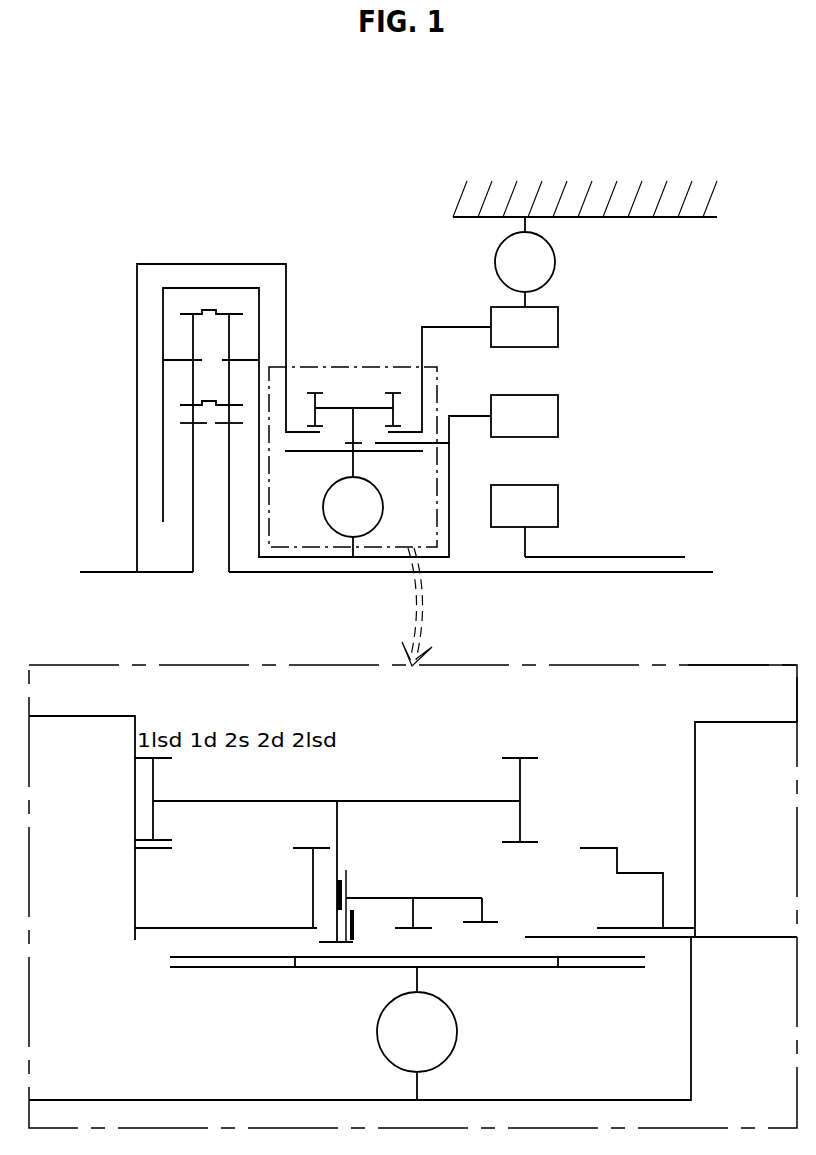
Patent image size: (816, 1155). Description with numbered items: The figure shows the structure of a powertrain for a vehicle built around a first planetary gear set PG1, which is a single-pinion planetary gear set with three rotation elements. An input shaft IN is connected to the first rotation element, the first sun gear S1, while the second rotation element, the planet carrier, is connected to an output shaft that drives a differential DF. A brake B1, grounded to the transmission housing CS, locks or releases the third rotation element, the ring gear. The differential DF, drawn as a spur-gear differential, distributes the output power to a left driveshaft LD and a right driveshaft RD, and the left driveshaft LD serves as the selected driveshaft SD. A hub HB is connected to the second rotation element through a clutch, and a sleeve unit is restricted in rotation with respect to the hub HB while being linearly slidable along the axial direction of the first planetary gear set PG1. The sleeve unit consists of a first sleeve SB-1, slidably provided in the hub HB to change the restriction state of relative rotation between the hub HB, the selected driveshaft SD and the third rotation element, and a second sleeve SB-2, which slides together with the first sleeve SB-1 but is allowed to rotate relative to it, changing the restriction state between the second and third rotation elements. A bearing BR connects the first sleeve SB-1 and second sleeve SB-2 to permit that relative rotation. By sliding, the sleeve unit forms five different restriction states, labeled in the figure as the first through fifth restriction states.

The transmission housing CS is at (513, 193).
The first planetary gear set PG1 is at (463, 387).
The brake B1 is at (525, 262).
The first sun gear S1 is at (524, 521).
The input shaft IN is at (625, 555).
The right driveshaft RD is at (703, 569).
The selected driveshaft SD is at (98, 570).
The left driveshaft LD is at (62, 715).
The differential DF is at (229, 283).
The first sleeve SB-1 is at (422, 800).
The second sleeve SB-2 is at (443, 897).
The bearing BR is at (355, 917).
The hub HB is at (258, 969).